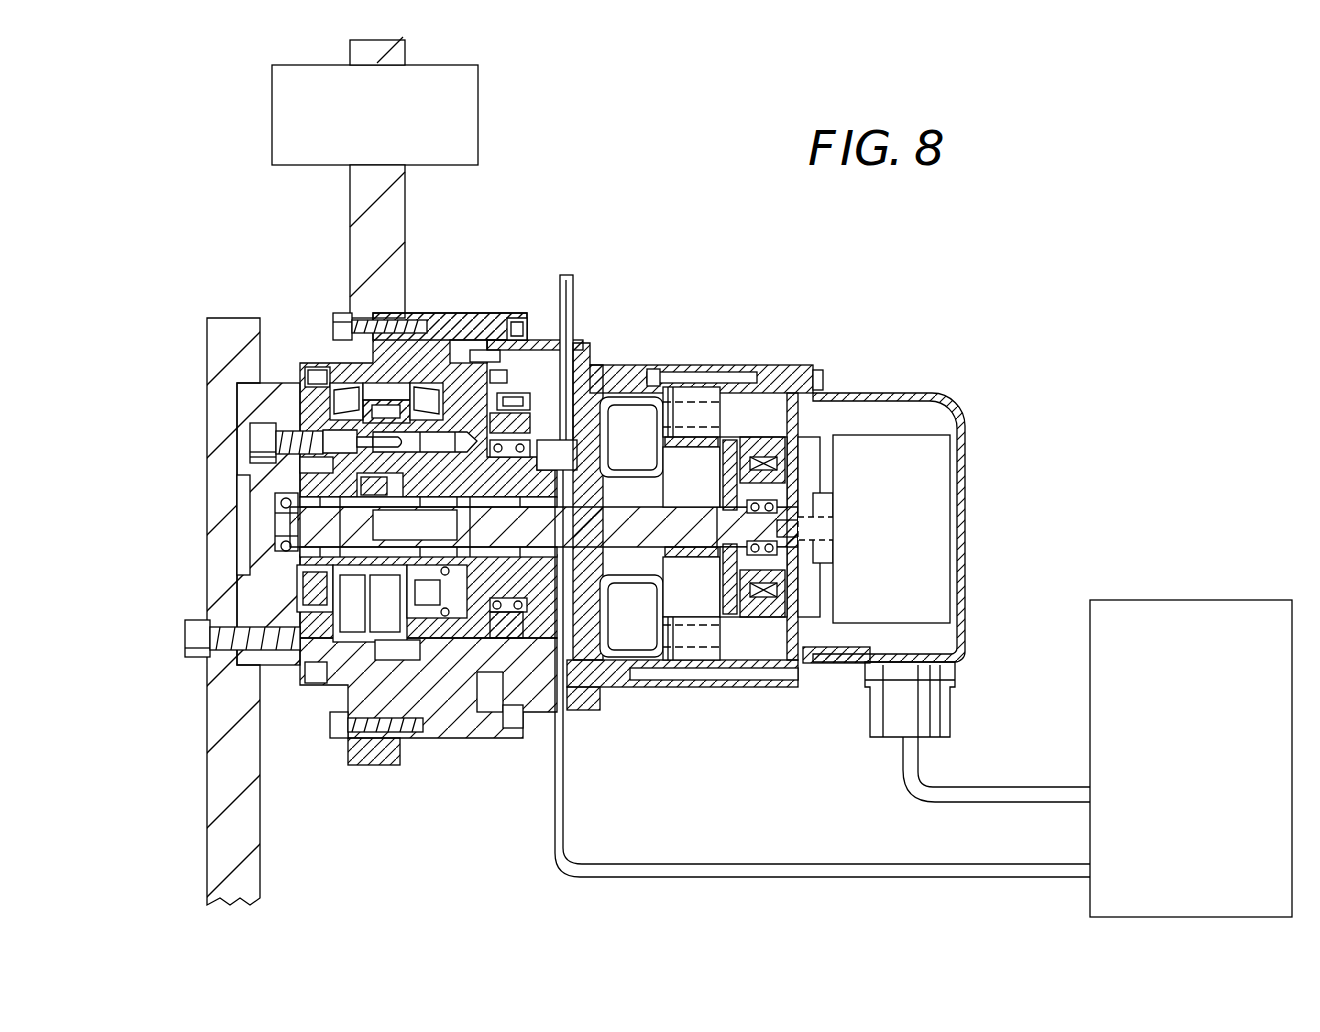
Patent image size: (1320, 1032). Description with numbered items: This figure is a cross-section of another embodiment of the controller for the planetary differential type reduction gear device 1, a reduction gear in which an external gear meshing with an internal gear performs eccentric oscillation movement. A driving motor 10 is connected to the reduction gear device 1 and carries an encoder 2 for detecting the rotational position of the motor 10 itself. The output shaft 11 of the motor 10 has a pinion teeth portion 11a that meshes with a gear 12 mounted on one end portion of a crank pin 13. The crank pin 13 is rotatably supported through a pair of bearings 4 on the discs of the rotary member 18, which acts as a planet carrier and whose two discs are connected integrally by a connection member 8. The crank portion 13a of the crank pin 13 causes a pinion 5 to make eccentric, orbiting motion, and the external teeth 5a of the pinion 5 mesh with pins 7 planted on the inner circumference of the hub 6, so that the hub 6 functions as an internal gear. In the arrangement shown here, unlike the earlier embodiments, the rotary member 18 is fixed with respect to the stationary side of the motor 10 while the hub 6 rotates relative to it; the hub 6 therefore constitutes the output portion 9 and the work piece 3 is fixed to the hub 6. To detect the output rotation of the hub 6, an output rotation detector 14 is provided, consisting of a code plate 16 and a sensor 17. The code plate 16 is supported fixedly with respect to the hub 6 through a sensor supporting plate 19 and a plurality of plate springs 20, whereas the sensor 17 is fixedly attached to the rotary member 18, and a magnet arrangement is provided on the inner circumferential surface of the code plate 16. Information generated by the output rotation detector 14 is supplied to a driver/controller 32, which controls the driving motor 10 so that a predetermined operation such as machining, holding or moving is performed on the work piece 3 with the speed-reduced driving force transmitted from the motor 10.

The planetary differential type reduction gear device 1 is at (466, 270).
The encoder 2 is at (940, 477).
The work piece 3 is at (405, 225).
The bearings 4 is at (410, 521).
The pinion 5 is at (386, 740).
The external teeth 5a is at (350, 680).
The hub 6 is at (456, 294).
The output portion 9 is at (452, 313).
The pins 7 is at (376, 735).
The connection member 8 is at (252, 440).
The driving motor 10 is at (710, 352).
The output shaft 11 is at (286, 527).
The pinion teeth portion 11a is at (240, 496).
The gear 12 is at (302, 665).
The crank pin 13 is at (300, 600).
The crank portion 13a is at (408, 700).
The output rotation detector 14 is at (540, 342).
The code plate 16 is at (578, 352).
The sensor 17 is at (565, 452).
The rotary member 18 is at (300, 380).
The sensor supporting plate 19 is at (540, 440).
The plate springs 20 is at (522, 668).
The driver/controller 32 is at (1190, 600).